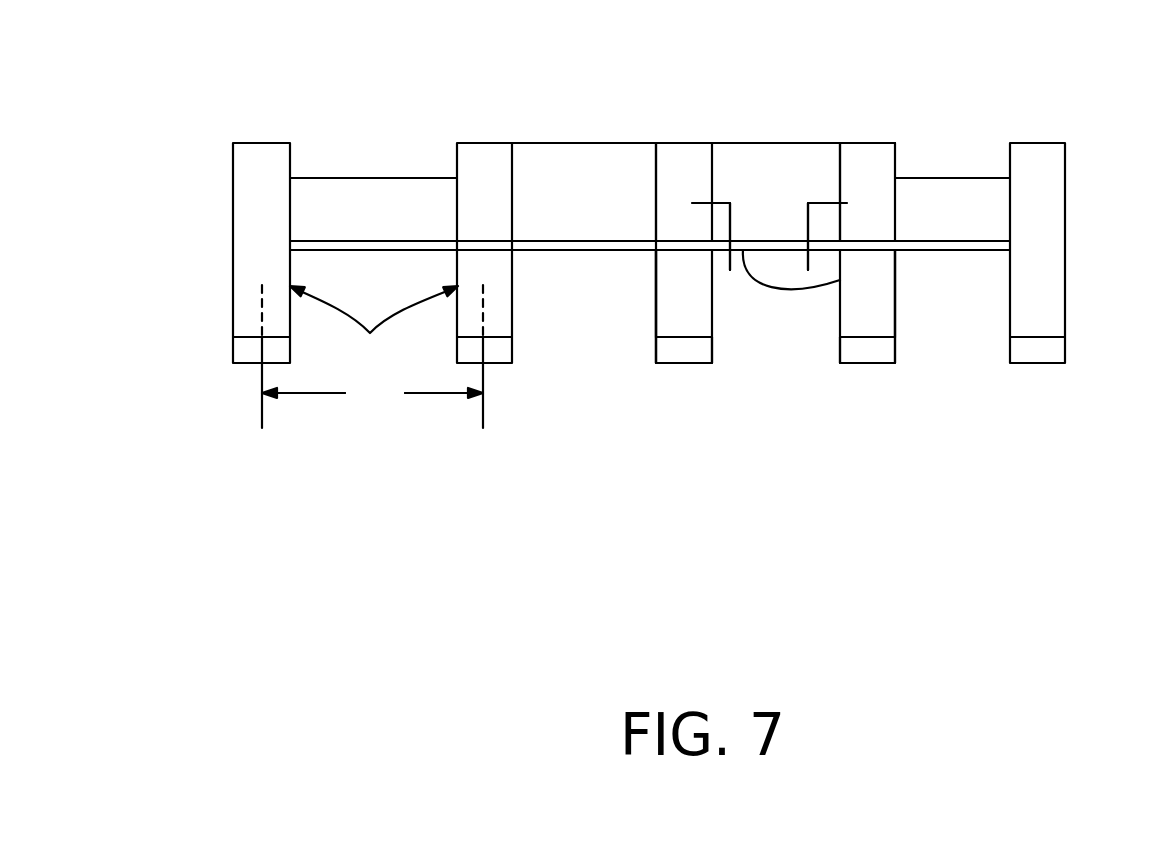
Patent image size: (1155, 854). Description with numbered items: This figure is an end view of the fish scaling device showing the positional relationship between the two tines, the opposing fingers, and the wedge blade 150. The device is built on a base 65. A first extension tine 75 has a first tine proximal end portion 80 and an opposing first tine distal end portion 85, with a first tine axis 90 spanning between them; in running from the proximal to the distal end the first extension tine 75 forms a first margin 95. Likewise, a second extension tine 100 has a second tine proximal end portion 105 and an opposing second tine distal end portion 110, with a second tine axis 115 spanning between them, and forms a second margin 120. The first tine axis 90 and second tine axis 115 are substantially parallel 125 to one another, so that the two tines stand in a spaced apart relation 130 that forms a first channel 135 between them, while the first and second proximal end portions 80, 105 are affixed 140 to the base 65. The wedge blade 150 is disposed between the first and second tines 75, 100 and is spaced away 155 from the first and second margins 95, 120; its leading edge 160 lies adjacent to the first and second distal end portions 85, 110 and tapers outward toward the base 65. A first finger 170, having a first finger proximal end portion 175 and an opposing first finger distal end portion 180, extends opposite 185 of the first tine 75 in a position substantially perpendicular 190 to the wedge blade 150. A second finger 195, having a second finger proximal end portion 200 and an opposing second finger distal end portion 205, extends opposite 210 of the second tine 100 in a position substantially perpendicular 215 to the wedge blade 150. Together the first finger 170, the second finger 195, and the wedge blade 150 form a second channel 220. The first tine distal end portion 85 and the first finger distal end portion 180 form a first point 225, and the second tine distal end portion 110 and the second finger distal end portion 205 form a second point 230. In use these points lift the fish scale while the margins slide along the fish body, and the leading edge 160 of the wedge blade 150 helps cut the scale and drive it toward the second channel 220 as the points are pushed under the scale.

The base 65 is at (690, 143).
The first extension tine 75 is at (672, 308).
The first tine proximal end portion 80 is at (665, 268).
The first tine distal end portion 85 is at (677, 328).
The first tine axis 90 is at (262, 383).
The first margin 95 is at (675, 358).
The second extension tine 100 is at (877, 303).
The second tine proximal end portion 105 is at (885, 272).
The second tine distal end portion 110 is at (882, 330).
The second tine axis 115 is at (483, 408).
The second margin 120 is at (865, 353).
The substantially parallel relationship 125 is at (372, 395).
The spaced apart relation 130 is at (372, 416).
The first channel 135 is at (713, 300).
The affixed attachment 140 is at (775, 293).
The wedge blade 150 is at (782, 230).
The spaced away relation 155 is at (374, 325).
The leading edge 160 is at (967, 240).
The first finger 170 is at (672, 173).
The first finger proximal end portion 175 is at (665, 233).
The first finger distal end portion 180 is at (679, 159).
The extending opposite position 185 is at (672, 173).
The substantially perpendicular position 190 is at (730, 203).
The second finger 195 is at (867, 208).
The second finger proximal end portion 200 is at (867, 228).
The second finger distal end portion 205 is at (865, 160).
The extending opposite position 210 is at (867, 208).
The substantially perpendicular position 215 is at (825, 203).
The second channel 220 is at (733, 165).
The first point 225 is at (672, 338).
The second point 230 is at (843, 340).